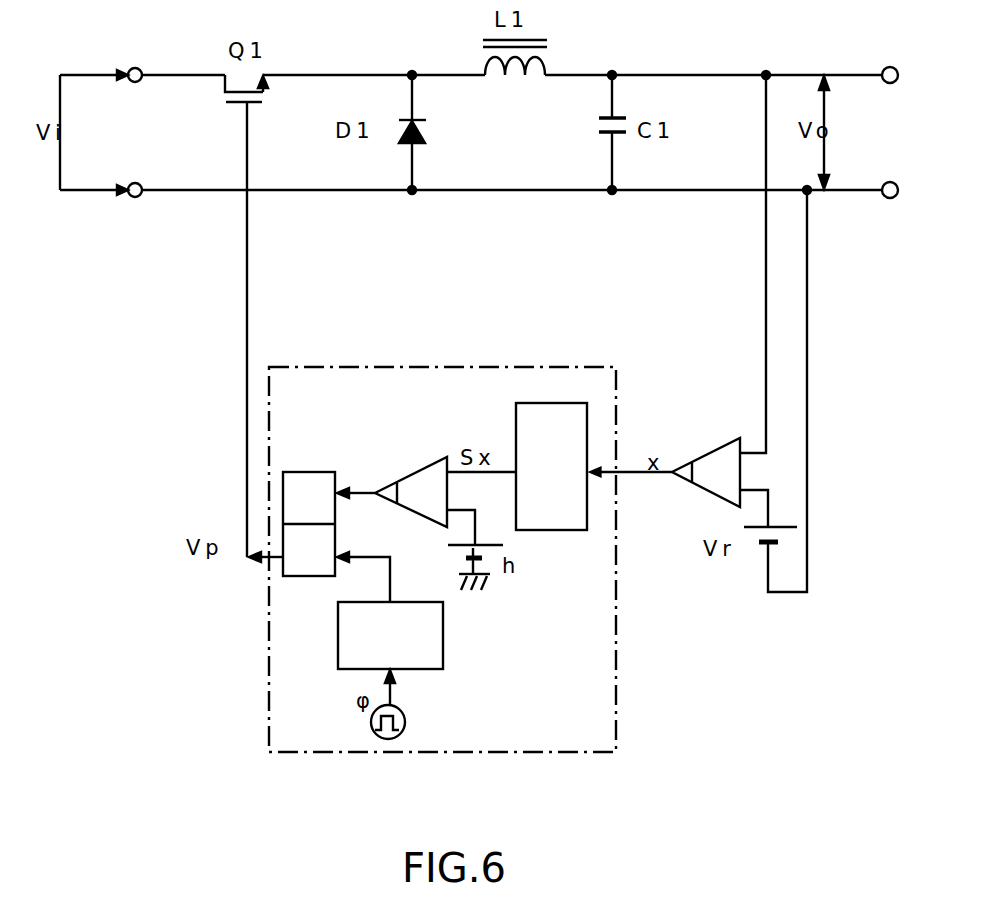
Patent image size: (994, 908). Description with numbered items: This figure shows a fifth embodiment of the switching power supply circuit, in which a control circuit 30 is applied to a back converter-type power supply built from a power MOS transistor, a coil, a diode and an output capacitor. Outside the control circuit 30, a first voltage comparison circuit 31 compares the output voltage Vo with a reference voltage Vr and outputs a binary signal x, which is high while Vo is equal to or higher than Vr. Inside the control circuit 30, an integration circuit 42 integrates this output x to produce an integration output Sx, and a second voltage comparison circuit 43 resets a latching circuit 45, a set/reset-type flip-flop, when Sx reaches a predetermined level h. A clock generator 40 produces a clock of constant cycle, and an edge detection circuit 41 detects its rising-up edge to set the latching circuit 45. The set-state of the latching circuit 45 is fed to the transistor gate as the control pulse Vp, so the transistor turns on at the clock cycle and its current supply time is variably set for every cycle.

The control circuit 30 is at (557, 356).
The first voltage comparison circuit 31 is at (731, 441).
The clock generator 40 is at (408, 720).
The edge detection circuit 41 is at (445, 629).
The integration circuit 42 is at (514, 430).
The second voltage comparison circuit 43 is at (432, 461).
The latching circuit 45 is at (308, 471).